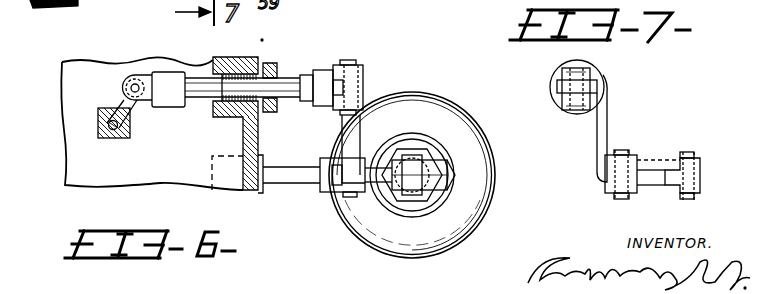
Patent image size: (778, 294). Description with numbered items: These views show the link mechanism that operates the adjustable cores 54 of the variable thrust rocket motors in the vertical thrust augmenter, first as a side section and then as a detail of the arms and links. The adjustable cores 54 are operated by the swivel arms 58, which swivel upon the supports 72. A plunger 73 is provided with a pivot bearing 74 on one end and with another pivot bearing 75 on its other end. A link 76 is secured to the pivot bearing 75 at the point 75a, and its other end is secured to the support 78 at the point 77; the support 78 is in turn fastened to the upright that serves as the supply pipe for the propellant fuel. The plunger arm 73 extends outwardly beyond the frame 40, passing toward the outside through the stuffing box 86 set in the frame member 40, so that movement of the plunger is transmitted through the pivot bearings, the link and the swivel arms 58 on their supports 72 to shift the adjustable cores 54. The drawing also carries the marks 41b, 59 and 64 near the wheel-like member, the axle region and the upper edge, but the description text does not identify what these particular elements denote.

In FIG. 6, the frame 40 is at (243, 134).
In FIG. 6, the wheel 41b is at (438, 91).
In FIG. 6, the swivel arm 58 is at (345, 135).
In FIG. 7, the swivel arm 58 is at (608, 118).
In FIG. 6, the axle 59 is at (415, 158).
In FIG. 7, the axle 59 is at (684, 160).
In FIG. 6, the support 72 is at (298, 184).
In FIG. 7, the support 72 is at (634, 160).
In FIG. 6, the plunger 73 is at (297, 100).
In FIG. 6, the pivot bearing 74 is at (322, 70).
In FIG. 6, the pivot bearing 75 is at (163, 72).
In FIG. 6, the link attachment point 75a is at (133, 74).
In FIG. 6, the link 76 is at (115, 105).
In FIG. 6, the link attachment point 77 is at (130, 117).
In FIG. 6, the support 78 is at (125, 140).
In FIG. 6, the stuffing box 86 is at (270, 58).
In FIG. 7, the stuffing box 86 is at (608, 71).
In FIG. 6, the adjustable core 54 is at (46, 9).
In FIG. 6, the member 64 is at (421, 10).